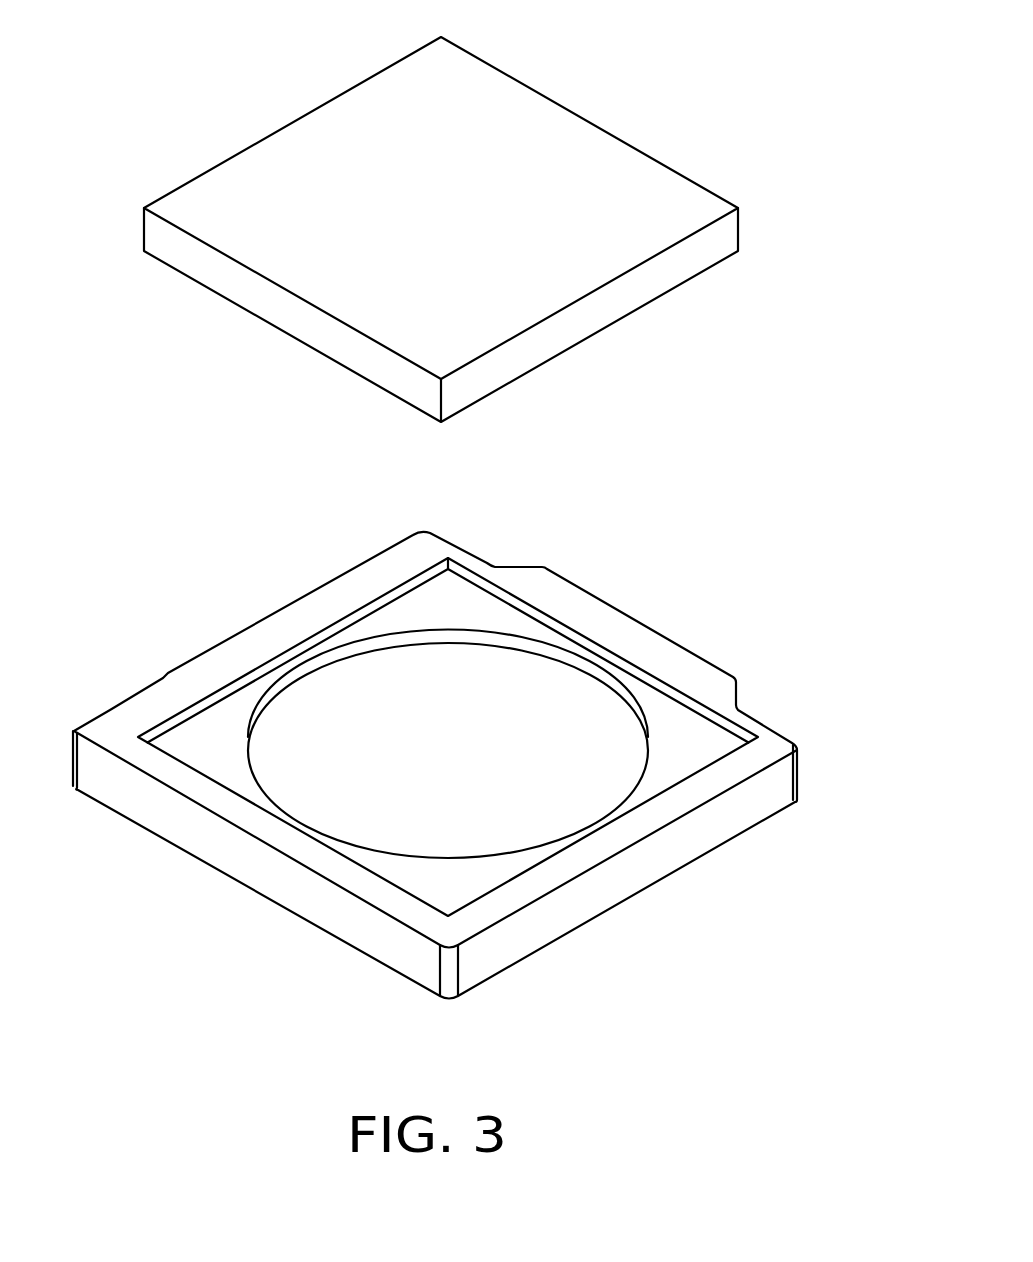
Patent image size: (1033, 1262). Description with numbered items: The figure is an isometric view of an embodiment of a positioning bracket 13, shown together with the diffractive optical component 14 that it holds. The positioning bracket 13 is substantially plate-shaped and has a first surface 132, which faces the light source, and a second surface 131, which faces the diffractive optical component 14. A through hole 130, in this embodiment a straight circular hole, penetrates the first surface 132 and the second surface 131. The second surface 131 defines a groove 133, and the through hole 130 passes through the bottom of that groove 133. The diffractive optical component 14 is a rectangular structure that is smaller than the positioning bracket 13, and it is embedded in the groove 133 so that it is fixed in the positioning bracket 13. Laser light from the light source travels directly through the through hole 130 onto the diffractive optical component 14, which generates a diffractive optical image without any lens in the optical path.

The positioning bracket 13 is at (435, 749).
The diffractive optical component 14 is at (540, 137).
The through hole 130 is at (327, 723).
The second surface 131 is at (341, 606).
The first surface 132 is at (215, 868).
The groove 133 is at (446, 616).